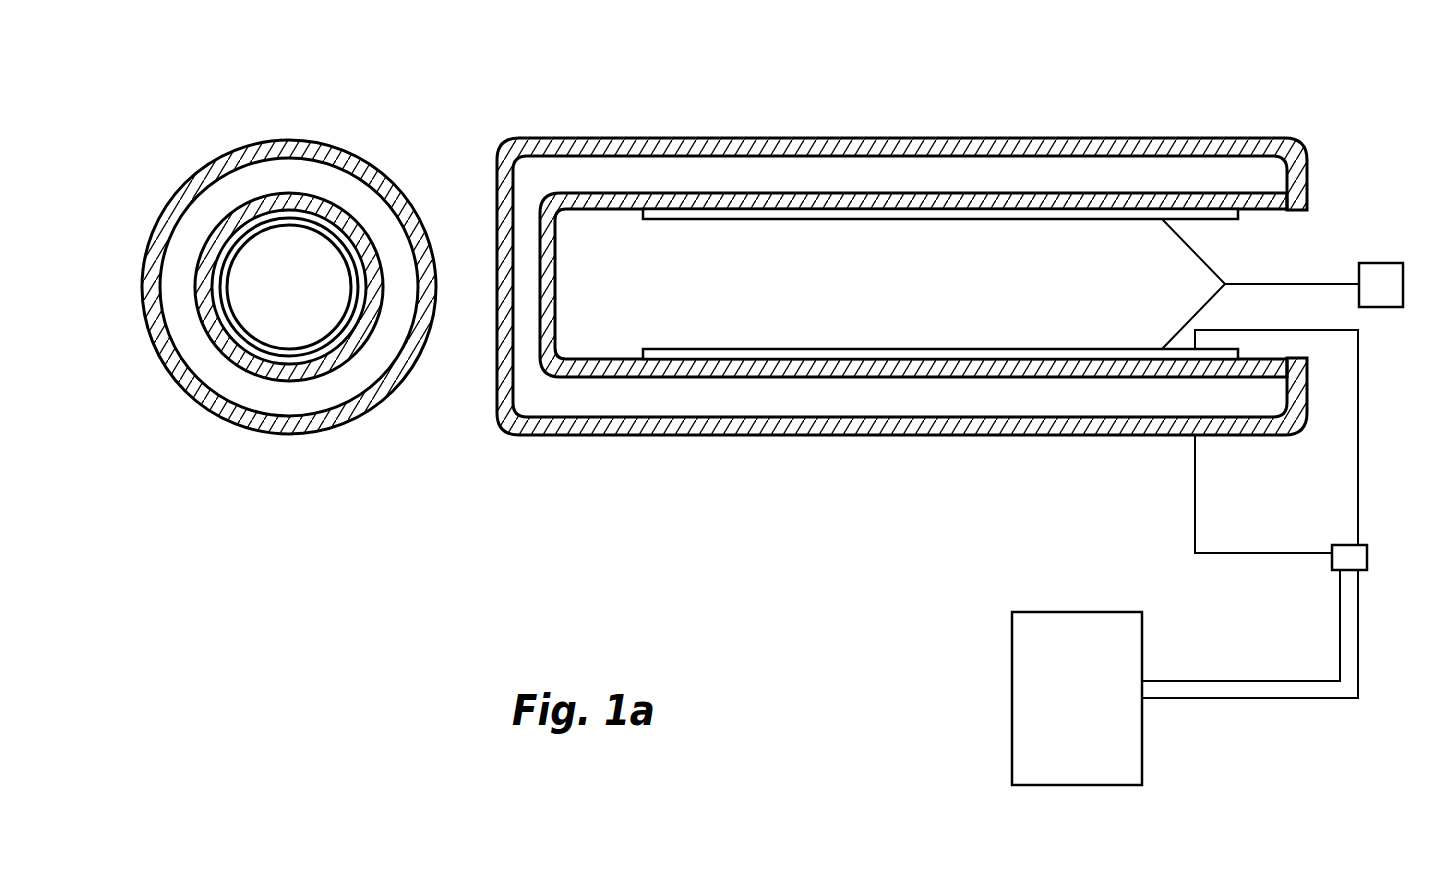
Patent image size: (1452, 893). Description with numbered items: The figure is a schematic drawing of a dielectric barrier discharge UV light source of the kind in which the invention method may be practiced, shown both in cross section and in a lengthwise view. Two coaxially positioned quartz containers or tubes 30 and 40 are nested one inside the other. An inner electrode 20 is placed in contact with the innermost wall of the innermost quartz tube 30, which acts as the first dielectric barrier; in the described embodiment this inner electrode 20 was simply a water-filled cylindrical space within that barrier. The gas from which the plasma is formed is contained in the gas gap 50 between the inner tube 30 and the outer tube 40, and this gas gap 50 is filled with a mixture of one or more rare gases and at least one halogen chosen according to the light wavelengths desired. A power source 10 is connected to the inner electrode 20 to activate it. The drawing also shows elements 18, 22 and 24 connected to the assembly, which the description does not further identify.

The power source 10 is at (1381, 285).
The electrical lead 18 is at (1195, 500).
The inner electrode 20 is at (313, 222).
The connector 22 is at (1370, 557).
The gas source 24 is at (1077, 698).
The inner quartz tube 30 is at (357, 237).
The outer quartz tube 40 is at (262, 145).
The gas gap 50 is at (220, 185).